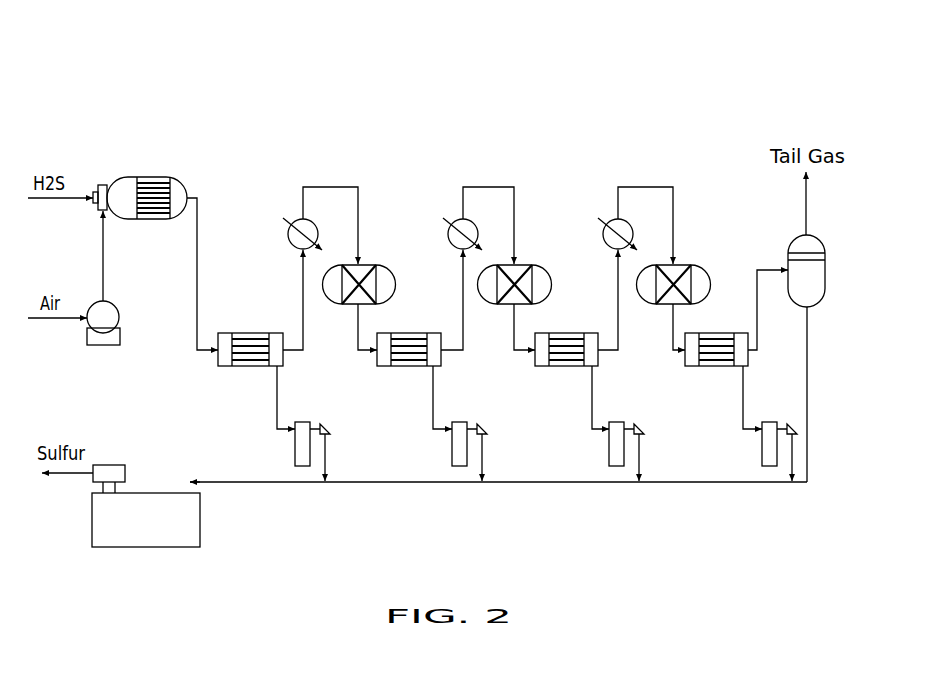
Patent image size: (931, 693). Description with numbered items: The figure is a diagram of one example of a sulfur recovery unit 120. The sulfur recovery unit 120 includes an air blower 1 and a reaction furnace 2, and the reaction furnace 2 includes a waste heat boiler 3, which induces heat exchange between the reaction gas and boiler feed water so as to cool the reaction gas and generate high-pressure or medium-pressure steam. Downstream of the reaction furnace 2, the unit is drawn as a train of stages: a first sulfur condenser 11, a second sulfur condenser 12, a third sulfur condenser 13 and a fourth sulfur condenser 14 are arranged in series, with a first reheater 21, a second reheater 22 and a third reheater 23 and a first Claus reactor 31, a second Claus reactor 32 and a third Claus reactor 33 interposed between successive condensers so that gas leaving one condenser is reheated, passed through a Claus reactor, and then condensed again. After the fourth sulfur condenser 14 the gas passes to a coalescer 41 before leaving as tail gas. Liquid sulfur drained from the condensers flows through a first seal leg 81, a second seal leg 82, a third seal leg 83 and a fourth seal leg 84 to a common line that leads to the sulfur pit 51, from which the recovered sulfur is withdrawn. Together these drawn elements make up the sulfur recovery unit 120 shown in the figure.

The air blower 1 is at (119, 318).
The reaction furnace 2 is at (173, 158).
The waste heat boiler 3 is at (152, 219).
The first sulfur condenser 11 is at (250, 367).
The second sulfur condenser 12 is at (407, 367).
The third sulfur condenser 13 is at (565, 367).
The fourth sulfur condenser 14 is at (718, 367).
The first reheater 21 is at (290, 240).
The second reheater 22 is at (449, 242).
The third reheater 23 is at (606, 241).
The first Claus reactor 31 is at (339, 304).
The second Claus reactor 32 is at (495, 304).
The third Claus reactor 33 is at (652, 305).
The coalescer 41 is at (790, 240).
The sulfur pit 51 is at (145, 505).
The first seal leg 81 is at (305, 422).
The second seal leg 82 is at (461, 422).
The third seal leg 83 is at (617, 422).
The fourth seal leg 84 is at (771, 422).
The sulfur recovery unit 120 is at (748, 108).